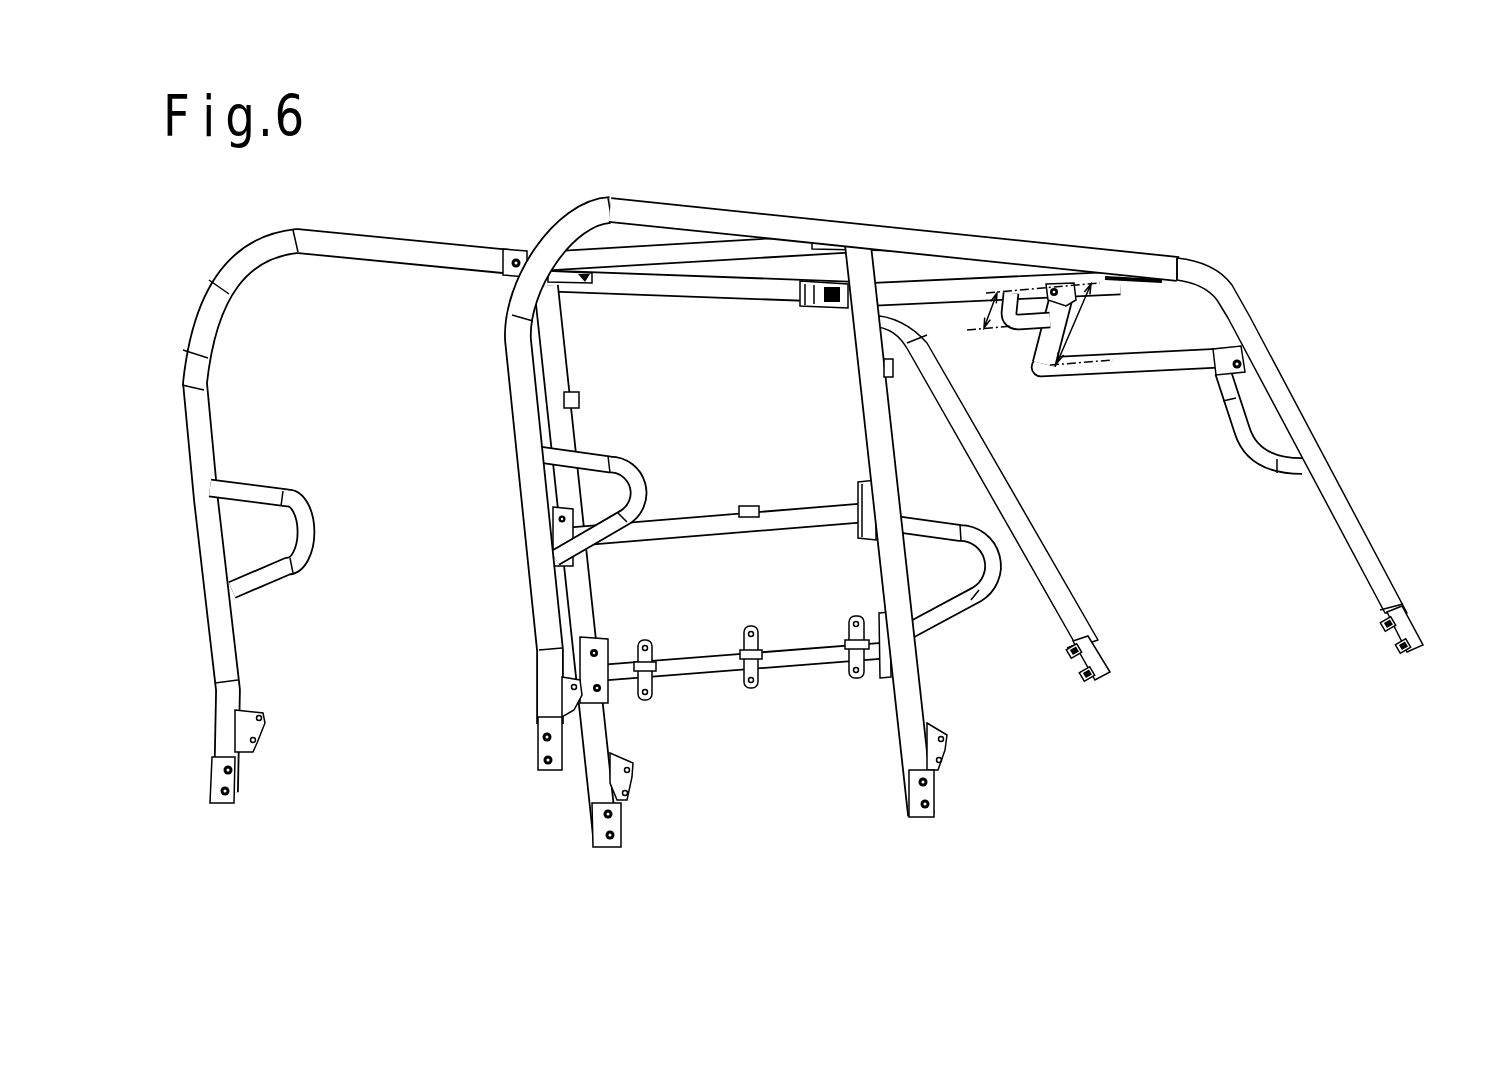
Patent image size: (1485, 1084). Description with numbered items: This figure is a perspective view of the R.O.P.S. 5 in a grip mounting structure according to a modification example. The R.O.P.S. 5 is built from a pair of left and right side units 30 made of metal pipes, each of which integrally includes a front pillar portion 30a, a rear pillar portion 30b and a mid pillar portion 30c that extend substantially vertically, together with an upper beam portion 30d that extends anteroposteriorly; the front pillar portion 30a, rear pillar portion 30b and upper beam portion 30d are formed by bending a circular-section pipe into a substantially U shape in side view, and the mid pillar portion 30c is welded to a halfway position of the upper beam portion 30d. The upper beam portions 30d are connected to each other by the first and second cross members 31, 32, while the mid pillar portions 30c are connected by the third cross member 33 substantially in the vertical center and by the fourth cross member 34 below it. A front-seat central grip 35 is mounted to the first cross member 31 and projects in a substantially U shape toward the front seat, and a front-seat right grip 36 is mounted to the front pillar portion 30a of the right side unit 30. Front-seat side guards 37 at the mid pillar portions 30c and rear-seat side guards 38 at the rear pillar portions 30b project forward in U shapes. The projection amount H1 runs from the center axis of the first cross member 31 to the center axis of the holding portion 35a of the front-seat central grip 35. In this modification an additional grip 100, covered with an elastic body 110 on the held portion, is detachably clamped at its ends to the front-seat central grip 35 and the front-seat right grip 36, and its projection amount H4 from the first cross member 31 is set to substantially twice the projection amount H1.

The R.O.P.S. 5 is at (556, 190).
The side unit 30 is at (1212, 270).
The front pillar portion 30a is at (1308, 436).
The rear pillar portion 30b is at (535, 497).
The mid pillar portion 30c is at (860, 388).
The upper beam portion 30d is at (1005, 233).
The first cross member 31 is at (1094, 294).
The second cross member 32 is at (611, 274).
The third cross member 33 is at (686, 522).
The fourth cross member 34 is at (775, 652).
The front-seat central grip 35 is at (1034, 350).
The holding portion 35a is at (1015, 328).
The front-seat right grip 36 is at (1240, 443).
The front-seat side guard 37 is at (955, 620).
The rear-seat side guard 38 is at (600, 453).
The additional grip 100 is at (1140, 382).
The elastic body 110 is at (1113, 372).
The projection amount H1 is at (988, 311).
The projection amount H4 is at (1081, 324).